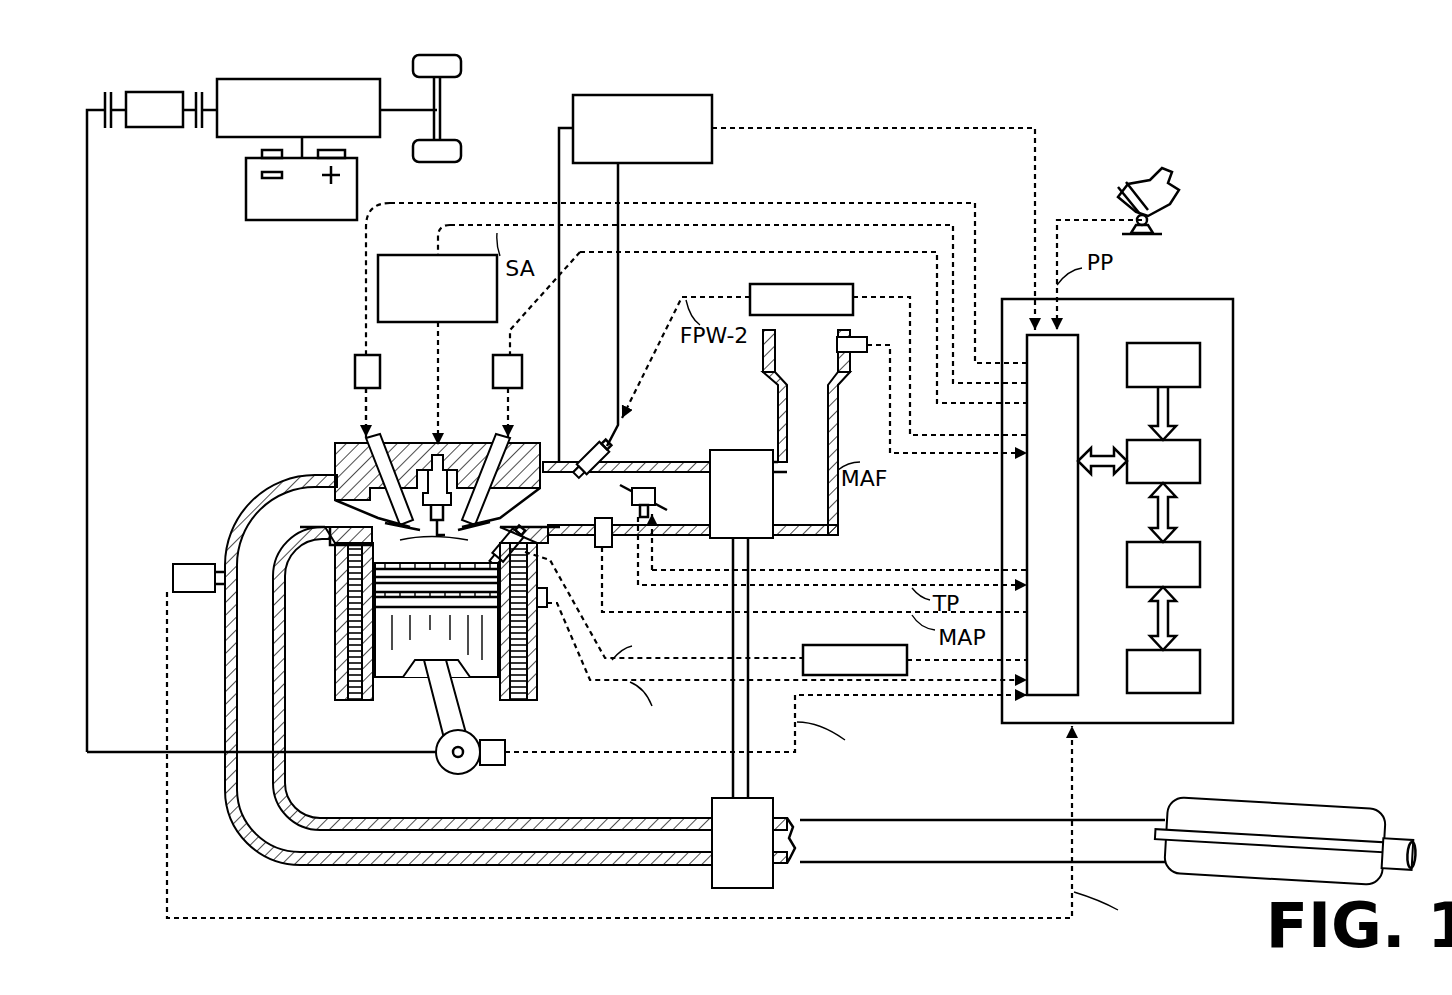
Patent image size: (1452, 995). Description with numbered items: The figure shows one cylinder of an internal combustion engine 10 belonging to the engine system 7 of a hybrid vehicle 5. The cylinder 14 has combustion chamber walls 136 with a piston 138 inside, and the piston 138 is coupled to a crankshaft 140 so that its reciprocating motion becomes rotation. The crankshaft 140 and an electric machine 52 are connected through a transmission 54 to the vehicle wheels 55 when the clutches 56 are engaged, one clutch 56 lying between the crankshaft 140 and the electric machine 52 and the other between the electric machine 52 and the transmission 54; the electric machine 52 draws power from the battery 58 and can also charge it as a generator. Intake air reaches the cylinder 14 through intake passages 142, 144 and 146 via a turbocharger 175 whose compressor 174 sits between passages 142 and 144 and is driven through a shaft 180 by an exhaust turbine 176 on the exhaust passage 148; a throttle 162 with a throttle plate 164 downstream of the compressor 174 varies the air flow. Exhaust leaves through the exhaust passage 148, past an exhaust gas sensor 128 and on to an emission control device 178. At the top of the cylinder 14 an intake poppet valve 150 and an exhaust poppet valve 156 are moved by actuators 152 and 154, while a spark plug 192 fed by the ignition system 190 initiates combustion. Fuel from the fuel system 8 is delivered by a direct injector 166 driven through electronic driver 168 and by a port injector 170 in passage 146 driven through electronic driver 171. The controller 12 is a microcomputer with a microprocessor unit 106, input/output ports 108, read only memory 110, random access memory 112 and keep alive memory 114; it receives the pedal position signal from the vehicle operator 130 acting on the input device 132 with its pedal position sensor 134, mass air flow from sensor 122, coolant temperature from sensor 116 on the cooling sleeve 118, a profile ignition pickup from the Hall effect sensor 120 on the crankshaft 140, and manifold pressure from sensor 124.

The vehicle 5 is at (1334, 113).
The engine system 7 is at (1302, 713).
The fuel system 8 is at (680, 95).
The internal combustion engine 10 is at (264, 395).
The controller 12 is at (1233, 302).
The cylinder 14 is at (366, 554).
The electric machine 52 is at (155, 127).
The transmission 54 is at (358, 137).
The vehicle wheels 55 is at (440, 162).
The clutch 56 is at (105, 95).
The battery 58 is at (298, 220).
The microprocessor unit 106 is at (1200, 462).
The input/output ports 108 is at (1078, 345).
The read only memory chip 110 is at (1200, 365).
The random access memory 112 is at (1200, 565).
The keep alive memory 114 is at (1200, 668).
The temperature sensor 116 is at (535, 655).
The cooling sleeve 118 is at (540, 608).
The Hall effect sensor 120 is at (492, 765).
The mass air flow sensor 122 is at (858, 337).
The manifold pressure sensor 124 is at (603, 550).
The exhaust gas sensor 128 is at (173, 570).
The vehicle operator 130 is at (1176, 184).
The input device 132 is at (1122, 196).
The pedal position sensor 134 is at (1160, 222).
The combustion chamber walls 136 is at (350, 700).
The piston 138 is at (420, 647).
The crankshaft 140 is at (449, 772).
The intake air passage 142 is at (806, 432).
The intake air passage 144 is at (690, 498).
The intake air passage 146 is at (629, 510).
The exhaust passage 148 is at (468, 670).
The intake poppet valve 150 is at (446, 480).
The actuator 152 is at (493, 372).
The actuator 154 is at (352, 372).
The exhaust poppet valve 156 is at (335, 472).
The throttle 162 is at (650, 488).
The throttle plate 164 is at (622, 485).
The fuel injector 166 is at (520, 530).
The electronic driver 168 is at (805, 654).
The fuel injector 170 is at (590, 450).
The electronic driver 171 is at (752, 290).
The compressor 174 is at (741, 494).
The turbocharger 175 is at (742, 897).
The exhaust turbine 176 is at (742, 843).
The emission control device 178 is at (1340, 808).
The shaft 180 is at (755, 763).
The ignition system 190 is at (422, 255).
The spark plug 192 is at (430, 477).